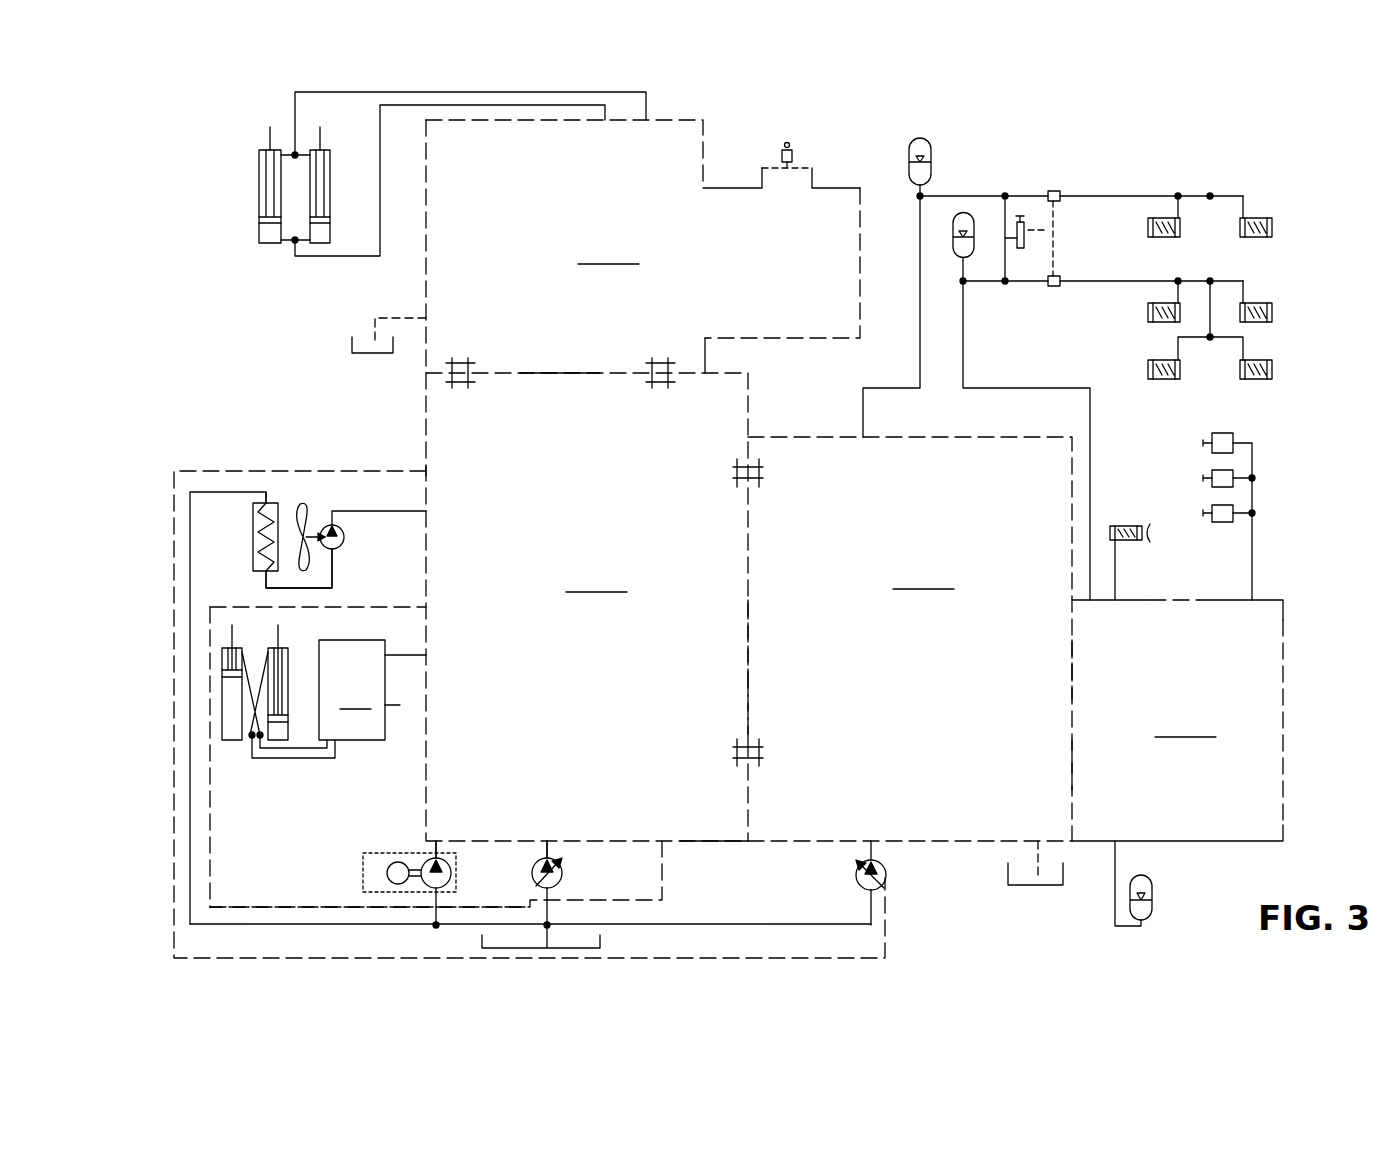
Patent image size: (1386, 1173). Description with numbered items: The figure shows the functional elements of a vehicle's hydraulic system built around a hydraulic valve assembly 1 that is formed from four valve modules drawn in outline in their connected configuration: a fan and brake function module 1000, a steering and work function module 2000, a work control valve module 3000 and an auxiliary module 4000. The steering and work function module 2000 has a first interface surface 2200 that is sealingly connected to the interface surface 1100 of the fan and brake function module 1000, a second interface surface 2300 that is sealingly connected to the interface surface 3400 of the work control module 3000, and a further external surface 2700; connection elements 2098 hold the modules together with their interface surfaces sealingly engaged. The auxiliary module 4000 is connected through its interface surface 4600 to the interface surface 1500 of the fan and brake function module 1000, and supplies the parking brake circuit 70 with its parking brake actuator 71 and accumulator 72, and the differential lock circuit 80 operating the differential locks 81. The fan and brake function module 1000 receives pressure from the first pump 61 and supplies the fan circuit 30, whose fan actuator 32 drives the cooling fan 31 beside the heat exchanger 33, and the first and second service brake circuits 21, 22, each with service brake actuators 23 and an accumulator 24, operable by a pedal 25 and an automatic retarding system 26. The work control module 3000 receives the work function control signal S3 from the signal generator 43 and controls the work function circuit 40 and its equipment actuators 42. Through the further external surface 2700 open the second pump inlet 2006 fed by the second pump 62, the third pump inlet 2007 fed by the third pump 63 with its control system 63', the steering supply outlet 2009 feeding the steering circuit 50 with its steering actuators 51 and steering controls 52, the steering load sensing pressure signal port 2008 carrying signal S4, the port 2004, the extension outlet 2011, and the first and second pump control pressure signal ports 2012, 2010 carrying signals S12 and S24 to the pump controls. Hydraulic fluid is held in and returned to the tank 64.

The hydraulic valve assembly 1 is at (851, 124).
The first service brake circuit 21 is at (1125, 196).
The second service brake circuit 22 is at (1110, 285).
The service brake actuator 23 is at (1150, 238).
The hydraulic accumulator 24 is at (932, 160).
The pedal 25 is at (1021, 218).
The automatic retarding system 26 is at (1061, 192).
The fan circuit 30 is at (333, 580).
The cooling fan 31 is at (310, 510).
The fan actuator 32 is at (345, 537).
The heat exchanger 33 is at (252, 537).
The work function circuit 40 is at (340, 256).
The equipment actuator 42 is at (258, 185).
The work function control signal generator 43 is at (785, 143).
The steering circuit 50 is at (312, 758).
The steering actuator 51 is at (236, 650).
The steering controls 52 is at (352, 690).
The first hydraulic pump 61 is at (887, 876).
The second hydraulic pump 62 is at (563, 876).
The third hydraulic pump 63 is at (460, 883).
The control system of the third pump 63' is at (395, 856).
The tank 64 is at (352, 346).
The parking brake circuit 70 is at (1115, 565).
The parking brake actuator 71 is at (1133, 524).
The hydraulic accumulator 72 is at (1153, 888).
The differential lock circuit 80 is at (1252, 545).
The differential lock 81 is at (1208, 448).
The fan and brake function module 1000 is at (910, 639).
The interface surface 1100 is at (747, 638).
The interface surface 1500 is at (1074, 666).
The steering and work function module 2000 is at (587, 480).
The port 2004 is at (661, 846).
The second pump inlet 2006 is at (548, 841).
The third pump inlet 2007 is at (437, 841).
The steering load sensing pressure signal port 2008 is at (428, 705).
The steering supply outlet 2009 is at (428, 655).
The second pump control pressure signal port 2010 is at (428, 607).
The extension outlet 2011 is at (427, 511).
The first pump control pressure signal port 2012 is at (428, 471).
The connection elements 2098 is at (460, 390).
The first interface surface 2200 is at (750, 700).
The second interface surface 2300 is at (560, 373).
The further external surface 2700 is at (700, 843).
The work control valve module 3000 is at (643, 246).
The interface surface 3400 is at (590, 375).
The auxiliary module 4000 is at (1177, 720).
The interface surface 4600 is at (1072, 768).
The work function control signal S3 is at (762, 178).
The steering load sensing pressure signal S4 is at (426, 706).
The first pump control pressure signal S12 is at (290, 471).
The second pump control pressure signal S24 is at (295, 907).